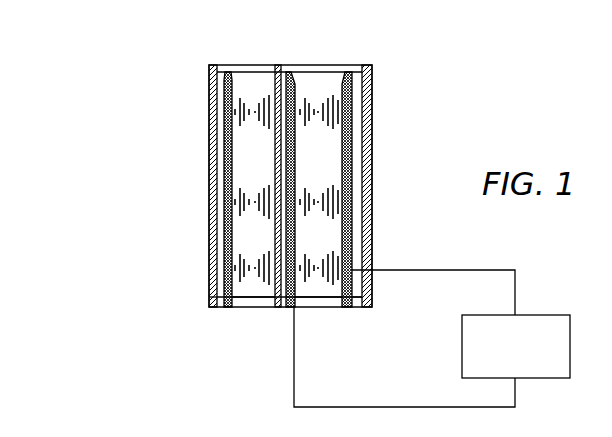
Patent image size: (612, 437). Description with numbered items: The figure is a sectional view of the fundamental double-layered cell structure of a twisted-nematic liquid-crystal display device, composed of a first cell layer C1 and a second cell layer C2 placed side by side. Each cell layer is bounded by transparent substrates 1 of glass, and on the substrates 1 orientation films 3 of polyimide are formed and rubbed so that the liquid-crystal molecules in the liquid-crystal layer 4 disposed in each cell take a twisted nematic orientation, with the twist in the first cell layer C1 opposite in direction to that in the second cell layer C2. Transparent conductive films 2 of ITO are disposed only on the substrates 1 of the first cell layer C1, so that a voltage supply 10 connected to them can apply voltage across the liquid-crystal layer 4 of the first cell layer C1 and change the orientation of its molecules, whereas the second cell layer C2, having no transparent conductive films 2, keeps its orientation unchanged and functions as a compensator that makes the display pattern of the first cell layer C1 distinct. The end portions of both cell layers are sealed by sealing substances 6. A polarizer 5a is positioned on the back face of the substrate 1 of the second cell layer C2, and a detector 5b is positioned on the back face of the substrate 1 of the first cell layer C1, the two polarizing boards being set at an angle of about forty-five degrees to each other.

The transparent substrate 1 is at (222, 72).
The transparent conductive film 2 is at (297, 148).
The orientation film 3 is at (272, 87).
The liquid-crystal layer 4 is at (260, 283).
The polarizer 5a is at (213, 307).
The detector 5b is at (357, 307).
The sealing substance 6 is at (300, 297).
The voltage supply 10 is at (547, 315).
The first cell layer C1 is at (372, 210).
The second cell layer C2 is at (208, 175).